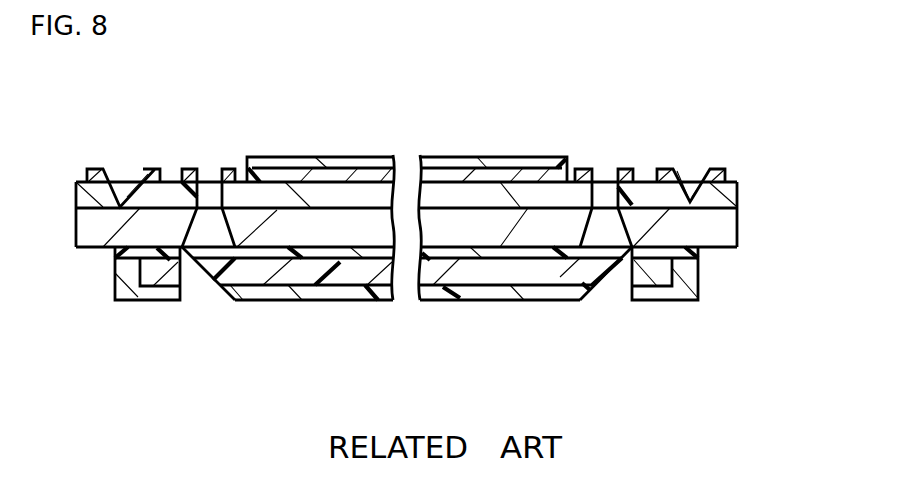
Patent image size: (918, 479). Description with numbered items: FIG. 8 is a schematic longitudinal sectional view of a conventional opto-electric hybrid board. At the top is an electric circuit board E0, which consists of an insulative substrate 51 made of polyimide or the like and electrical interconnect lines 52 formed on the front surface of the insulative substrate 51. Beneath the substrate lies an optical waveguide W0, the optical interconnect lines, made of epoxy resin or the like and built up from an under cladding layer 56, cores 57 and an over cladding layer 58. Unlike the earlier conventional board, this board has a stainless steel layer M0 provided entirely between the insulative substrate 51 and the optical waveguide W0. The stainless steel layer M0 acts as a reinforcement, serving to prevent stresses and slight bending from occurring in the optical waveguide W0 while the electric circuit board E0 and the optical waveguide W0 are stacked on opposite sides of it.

The insulative substrate 51 is at (331, 182).
The electrical interconnect lines 52 is at (447, 178).
The under cladding layer 56 is at (456, 255).
The cores 57 is at (513, 272).
The over cladding layer 58 is at (560, 295).
The electric circuit board E0 is at (759, 157).
The stainless steel layer M0 is at (723, 233).
The optical waveguide W0 is at (759, 247).